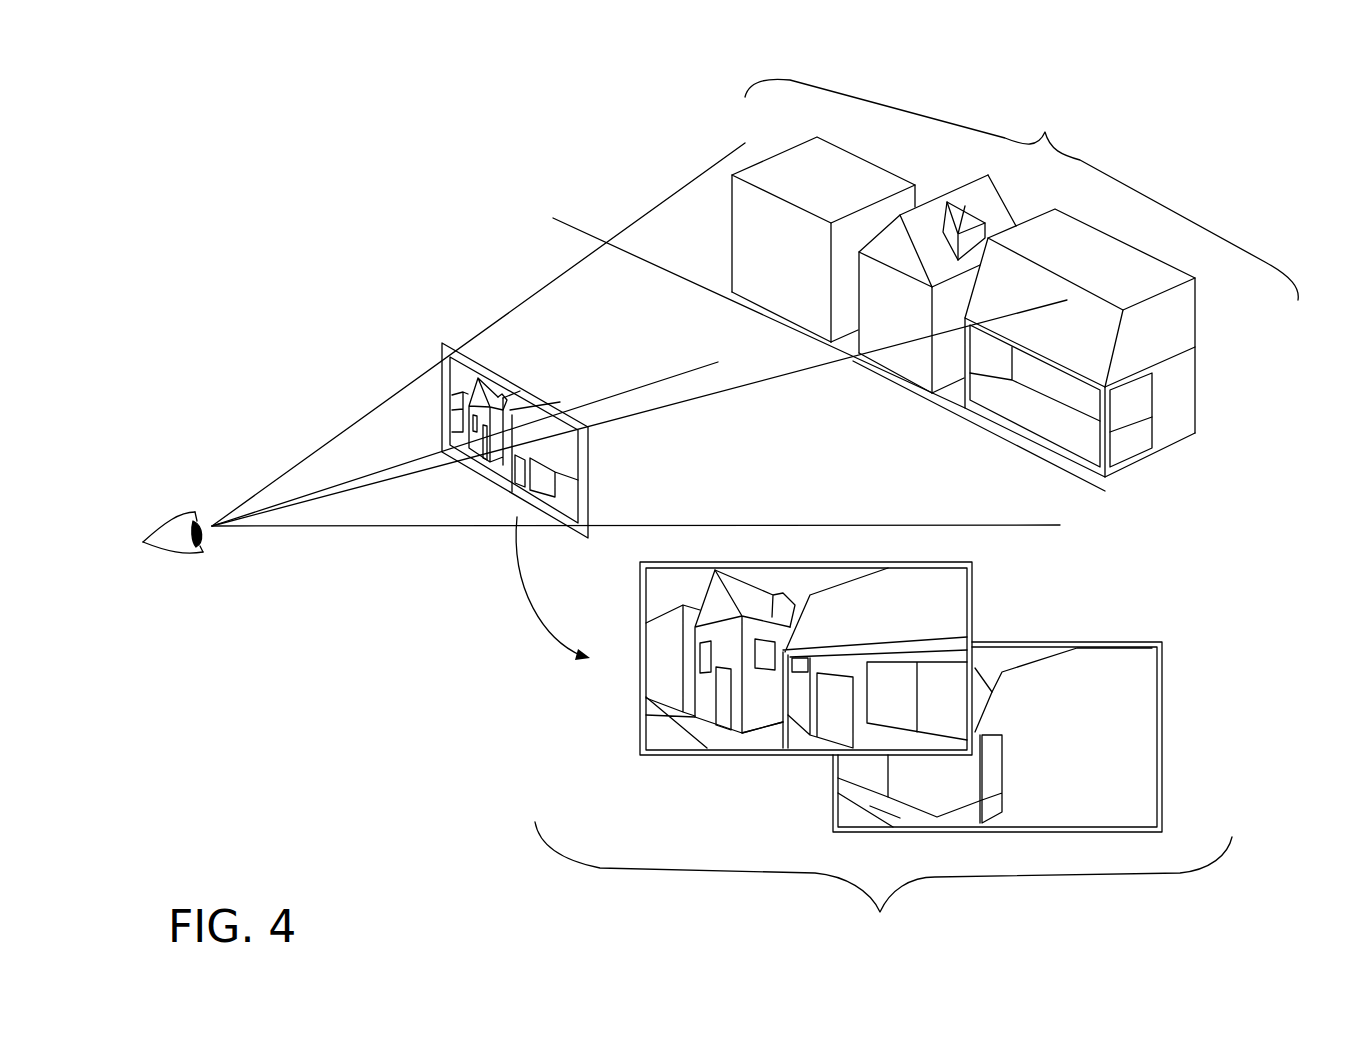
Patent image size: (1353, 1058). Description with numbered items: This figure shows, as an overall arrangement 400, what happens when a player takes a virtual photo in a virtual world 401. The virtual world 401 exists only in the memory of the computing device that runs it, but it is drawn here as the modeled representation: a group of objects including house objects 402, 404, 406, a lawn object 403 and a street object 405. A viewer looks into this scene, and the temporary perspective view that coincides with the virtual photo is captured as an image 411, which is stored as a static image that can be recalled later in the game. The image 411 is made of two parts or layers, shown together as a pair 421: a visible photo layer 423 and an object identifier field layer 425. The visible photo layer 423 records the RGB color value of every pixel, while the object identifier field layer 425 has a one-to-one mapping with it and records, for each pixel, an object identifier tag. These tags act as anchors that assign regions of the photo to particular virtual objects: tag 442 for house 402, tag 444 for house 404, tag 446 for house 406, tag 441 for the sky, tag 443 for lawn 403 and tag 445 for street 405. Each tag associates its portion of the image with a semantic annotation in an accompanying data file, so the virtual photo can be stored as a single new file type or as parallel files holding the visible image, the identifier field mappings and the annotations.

The perspective viewing system 400 is at (246, 203).
The virtual world 401 is at (1021, 189).
The house object 402 is at (1197, 372).
The lawn object 403 is at (712, 270).
The house object 404 is at (885, 368).
The street object 405 is at (676, 310).
The house object 406 is at (773, 157).
The image 411 is at (434, 396).
The rendered images 421 is at (883, 887).
The visible photo layer 423 is at (630, 721).
The object identifier field layer 425 is at (1175, 702).
The object identifier tag 441 is at (1002, 655).
The object identifier tag 442 is at (1106, 760).
The object identifier tag 443 is at (887, 810).
The object identifier tag 444 is at (951, 798).
The object identifier tag 445 is at (848, 813).
The object identifier tag 446 is at (850, 768).